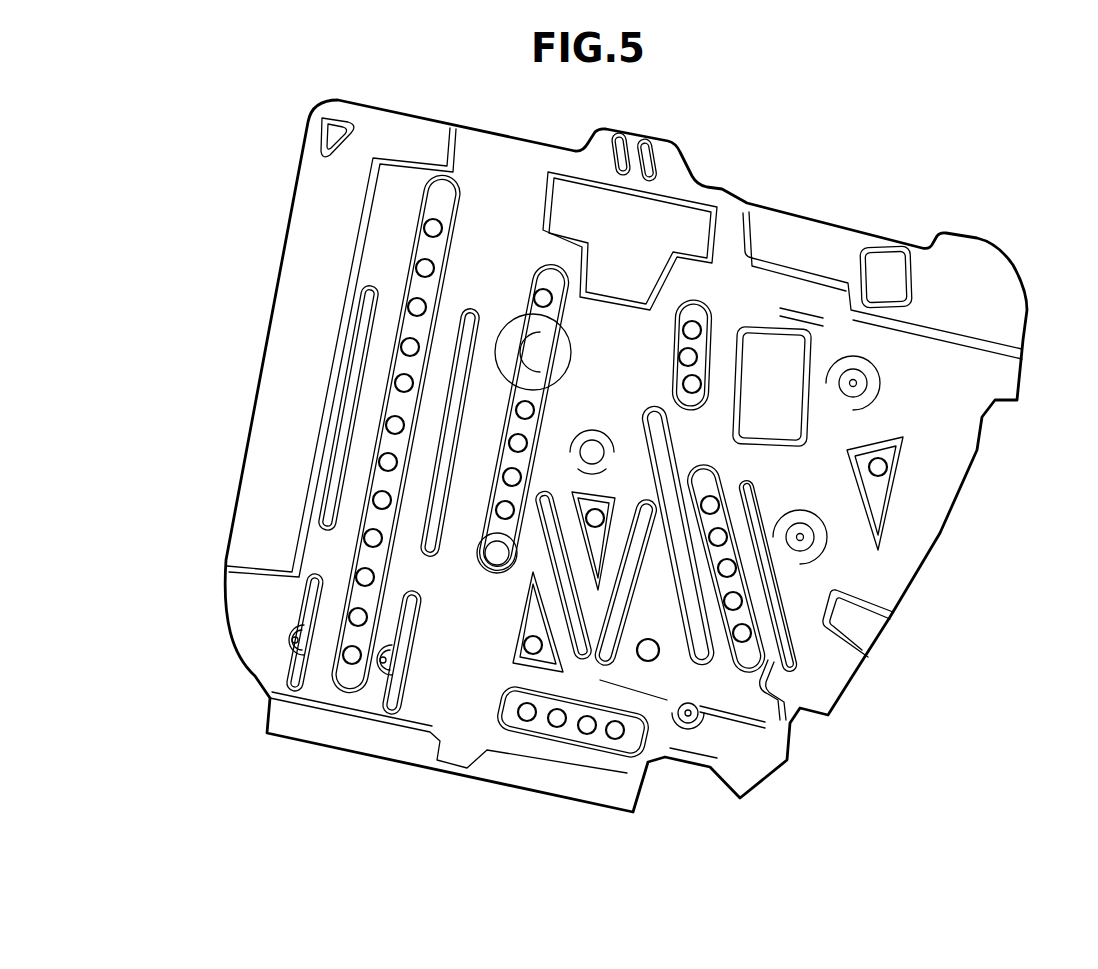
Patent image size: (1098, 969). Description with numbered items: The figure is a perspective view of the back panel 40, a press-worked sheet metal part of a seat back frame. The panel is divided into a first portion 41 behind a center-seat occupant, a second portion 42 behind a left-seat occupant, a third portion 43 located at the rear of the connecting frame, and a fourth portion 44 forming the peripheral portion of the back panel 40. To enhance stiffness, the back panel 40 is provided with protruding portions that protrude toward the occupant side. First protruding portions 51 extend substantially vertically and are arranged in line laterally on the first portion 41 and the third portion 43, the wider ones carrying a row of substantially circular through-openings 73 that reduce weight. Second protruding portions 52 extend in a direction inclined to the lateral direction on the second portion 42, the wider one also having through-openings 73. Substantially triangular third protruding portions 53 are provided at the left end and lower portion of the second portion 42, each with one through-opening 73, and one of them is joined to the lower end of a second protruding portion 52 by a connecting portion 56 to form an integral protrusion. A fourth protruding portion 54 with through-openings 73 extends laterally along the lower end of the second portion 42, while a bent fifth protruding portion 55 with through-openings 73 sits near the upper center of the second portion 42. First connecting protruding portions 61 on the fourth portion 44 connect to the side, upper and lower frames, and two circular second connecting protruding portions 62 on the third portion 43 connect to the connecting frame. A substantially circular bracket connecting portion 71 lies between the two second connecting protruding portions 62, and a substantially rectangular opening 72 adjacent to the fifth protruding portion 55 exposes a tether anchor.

The back panel 40 is at (1014, 202).
The first portion 41 is at (380, 243).
The second portion 42 is at (795, 293).
The third portion 43 is at (462, 640).
The fourth portion 44 is at (497, 162).
The first protruding portion 51 is at (393, 362).
The second protruding portion 52 is at (665, 476).
The third protruding portion 53 is at (525, 612).
The fourth protruding portion 54 is at (567, 732).
The fifth protruding portion 55 is at (680, 385).
The connecting portion 56 is at (740, 705).
The first connecting protruding portion 61 is at (325, 205).
The second connecting protruding portion 62 is at (540, 355).
The bracket connecting portion 71 is at (592, 450).
The opening 72 is at (808, 338).
The through-opening 73 is at (694, 326).